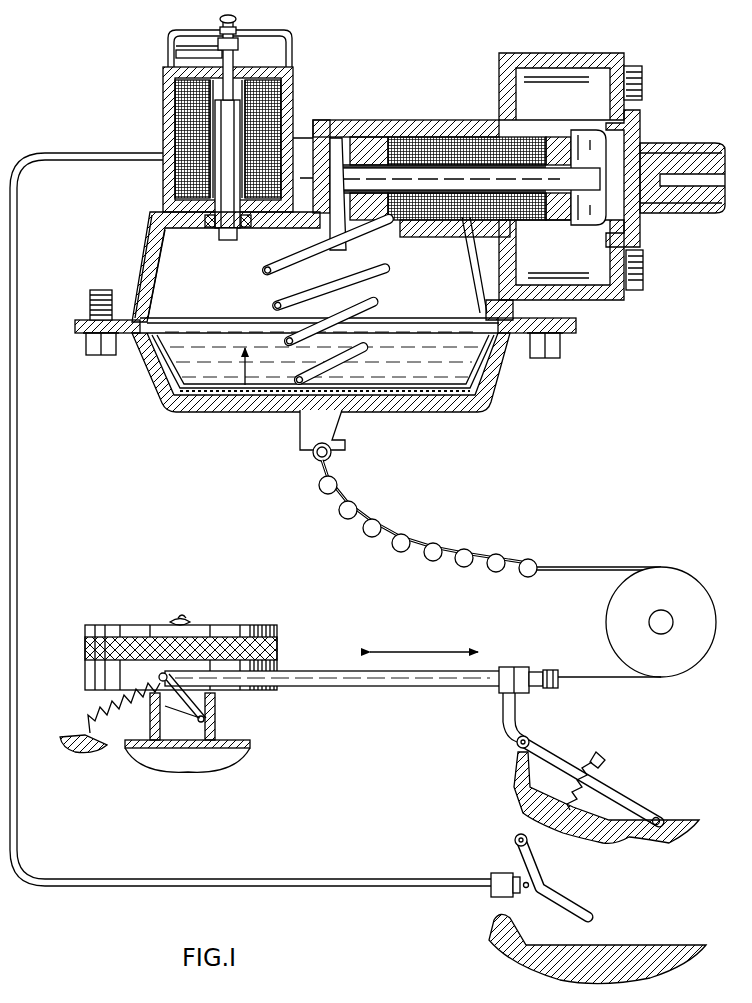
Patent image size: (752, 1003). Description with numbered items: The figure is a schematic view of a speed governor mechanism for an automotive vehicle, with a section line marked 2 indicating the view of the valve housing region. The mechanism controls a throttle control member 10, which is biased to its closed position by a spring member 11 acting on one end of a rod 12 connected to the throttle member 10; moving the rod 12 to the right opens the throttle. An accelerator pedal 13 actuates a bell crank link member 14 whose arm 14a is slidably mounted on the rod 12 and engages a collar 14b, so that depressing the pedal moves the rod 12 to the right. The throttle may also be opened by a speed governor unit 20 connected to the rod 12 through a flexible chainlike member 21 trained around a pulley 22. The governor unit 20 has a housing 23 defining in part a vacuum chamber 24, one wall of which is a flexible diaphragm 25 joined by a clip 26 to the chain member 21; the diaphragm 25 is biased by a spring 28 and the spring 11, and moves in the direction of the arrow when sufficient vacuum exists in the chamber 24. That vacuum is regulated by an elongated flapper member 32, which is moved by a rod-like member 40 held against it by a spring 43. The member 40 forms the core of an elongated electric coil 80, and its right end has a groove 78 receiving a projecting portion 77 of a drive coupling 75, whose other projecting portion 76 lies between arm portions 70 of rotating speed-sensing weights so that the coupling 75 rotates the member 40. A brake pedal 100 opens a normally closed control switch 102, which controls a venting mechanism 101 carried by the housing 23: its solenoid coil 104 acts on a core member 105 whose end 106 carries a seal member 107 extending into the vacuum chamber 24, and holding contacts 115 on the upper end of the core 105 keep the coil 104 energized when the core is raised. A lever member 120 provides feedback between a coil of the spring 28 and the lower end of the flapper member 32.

The section line 2- 2 is at (300, 198).
The throttle control member 10 is at (212, 721).
The spring member 11 is at (103, 715).
The rod 12 is at (298, 668).
The accelerator pedal 13 is at (598, 768).
The bell crank link member 14 is at (547, 742).
The arm 14a is at (516, 705).
The collar 14b is at (527, 668).
The speed governor unit 20 is at (359, 251).
The flexible chainlike member 21 is at (585, 567).
The pulley 22 is at (669, 580).
The housing 23 is at (148, 252).
The vacuum chamber 24 is at (153, 388).
The flexible diaphragm 25 is at (232, 398).
The clip 26 is at (308, 455).
The spring 28 is at (393, 268).
The flapper member 32 is at (348, 125).
The member 40 is at (425, 166).
The spring 43 is at (340, 243).
The arm portions 70 is at (636, 135).
The drive coupling 75 is at (597, 168).
The projecting portion 76 is at (600, 175).
The projecting portion 77 is at (575, 166).
The groove 78 is at (560, 186).
The electric coil 80 is at (410, 147).
The brake pedal 100 is at (573, 902).
The venting mechanism 101 is at (233, 121).
The control switch 102 is at (499, 870).
The solenoid coil 104 is at (270, 88).
The core member 105 is at (227, 128).
The end 106 is at (227, 234).
The seal member 107 is at (207, 220).
The holding contacts 115 is at (250, 52).
The lever member 120 is at (330, 240).